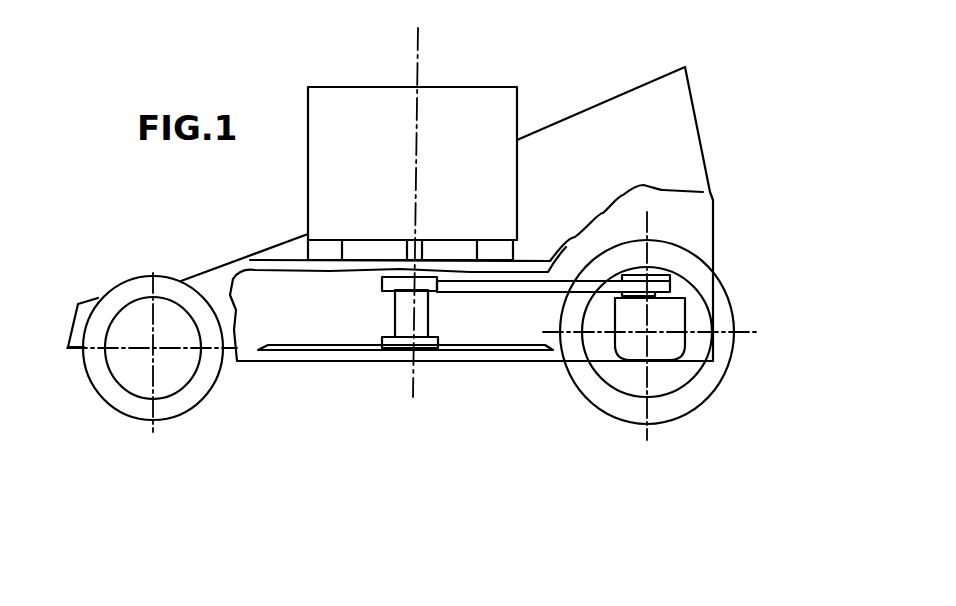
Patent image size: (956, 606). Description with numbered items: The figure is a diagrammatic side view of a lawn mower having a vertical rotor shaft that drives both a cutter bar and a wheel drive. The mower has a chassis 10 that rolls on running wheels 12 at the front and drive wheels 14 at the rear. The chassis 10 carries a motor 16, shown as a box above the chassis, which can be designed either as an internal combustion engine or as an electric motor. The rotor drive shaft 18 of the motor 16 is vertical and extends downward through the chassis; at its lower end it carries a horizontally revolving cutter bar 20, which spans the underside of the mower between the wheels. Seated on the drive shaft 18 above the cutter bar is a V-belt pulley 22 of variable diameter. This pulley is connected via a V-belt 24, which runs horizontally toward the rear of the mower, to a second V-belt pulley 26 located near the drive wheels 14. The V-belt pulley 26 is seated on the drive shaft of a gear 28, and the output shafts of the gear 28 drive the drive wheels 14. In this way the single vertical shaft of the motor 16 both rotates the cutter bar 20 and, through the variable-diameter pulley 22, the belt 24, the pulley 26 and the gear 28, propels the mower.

The chassis 10 is at (265, 330).
The running wheels 12 is at (133, 378).
The drive wheels 14 is at (637, 402).
The motor 16 is at (440, 115).
The rotor drive shaft 18 is at (407, 250).
The cutter bar 20 is at (477, 350).
The V-belt pulley of variable diameter 22 is at (387, 292).
The V-belt 24 is at (512, 287).
The V-belt pulley 26 is at (663, 277).
The gear 28 is at (670, 318).